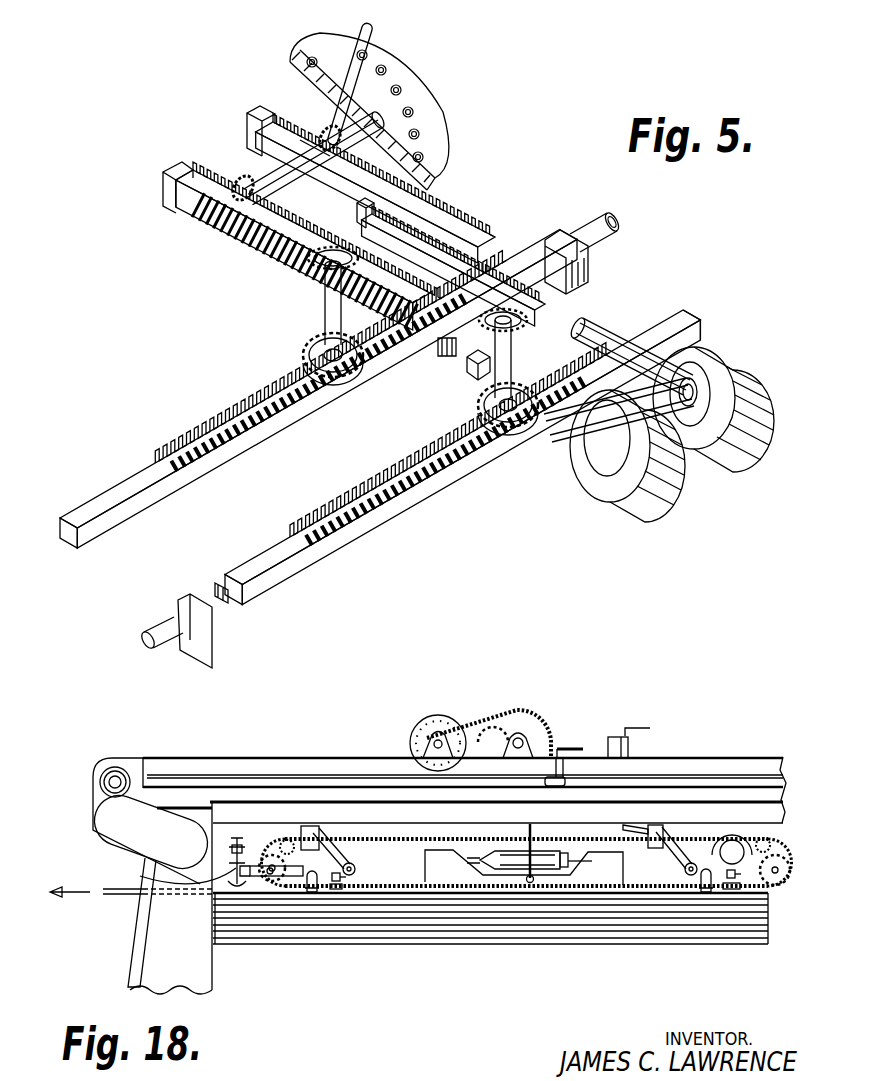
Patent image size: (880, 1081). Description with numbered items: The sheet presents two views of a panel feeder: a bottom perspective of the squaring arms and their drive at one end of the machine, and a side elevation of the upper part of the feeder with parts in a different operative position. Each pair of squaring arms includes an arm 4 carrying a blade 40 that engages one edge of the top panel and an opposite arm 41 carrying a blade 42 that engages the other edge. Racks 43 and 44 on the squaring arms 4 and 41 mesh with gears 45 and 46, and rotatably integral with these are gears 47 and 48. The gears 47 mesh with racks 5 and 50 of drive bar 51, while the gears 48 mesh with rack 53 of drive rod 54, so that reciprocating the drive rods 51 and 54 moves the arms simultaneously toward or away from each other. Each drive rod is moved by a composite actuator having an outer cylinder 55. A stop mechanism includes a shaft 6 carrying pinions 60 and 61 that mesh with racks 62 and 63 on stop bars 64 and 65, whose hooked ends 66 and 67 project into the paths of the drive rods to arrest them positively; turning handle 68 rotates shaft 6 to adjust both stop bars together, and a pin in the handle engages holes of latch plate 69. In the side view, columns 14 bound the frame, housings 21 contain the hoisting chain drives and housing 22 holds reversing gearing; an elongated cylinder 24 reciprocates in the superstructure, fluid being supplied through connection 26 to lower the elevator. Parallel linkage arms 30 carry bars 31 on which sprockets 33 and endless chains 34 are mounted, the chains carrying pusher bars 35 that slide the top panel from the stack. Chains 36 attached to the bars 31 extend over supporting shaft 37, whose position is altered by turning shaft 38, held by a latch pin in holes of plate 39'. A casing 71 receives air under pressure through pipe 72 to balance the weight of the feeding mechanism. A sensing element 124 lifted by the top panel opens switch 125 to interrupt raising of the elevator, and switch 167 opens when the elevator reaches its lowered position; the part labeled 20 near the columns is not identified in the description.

In FIG. 5, the squaring arm 4 is at (658, 318).
In FIG. 18, the rack 5 is at (522, 928).
In FIG. 5, the shaft 6 is at (262, 175).
In FIG. 18, the column 14 is at (143, 950).
In FIG. 18, the sheet 20 is at (190, 947).
In FIG. 18, the housing 21 is at (160, 843).
In FIG. 18, the housing 22 is at (107, 791).
In FIG. 18, the elongated cylinder 24 is at (703, 778).
In FIG. 18, the connection 26 is at (578, 747).
In FIG. 18, the parallel linkage arm 30 is at (323, 835).
In FIG. 18, the bar 31 is at (388, 877).
In FIG. 18, the sprocket 33 is at (776, 857).
In FIG. 18, the endless chain 34 is at (460, 835).
In FIG. 18, the sheet feeding pusher bar 35 is at (397, 832).
In FIG. 18, the chain 36 is at (538, 833).
In FIG. 18, the supporting shaft 37 is at (521, 733).
In FIG. 18, the shaft 38 is at (433, 742).
In FIG. 18, the latch plate 39' is at (468, 726).
In FIG. 5, the blade 40 is at (200, 643).
In FIG. 18, the blade 40 is at (313, 892).
In FIG. 5, the squaring arm 41 is at (98, 502).
In FIG. 18, the squaring arm 41 is at (347, 890).
In FIG. 5, the blade 42 is at (577, 268).
In FIG. 5, the rack 43 is at (406, 470).
In FIG. 5, the rack 44 is at (275, 392).
In FIG. 5, the gear 45 is at (482, 412).
In FIG. 5, the gear 46 is at (353, 368).
In FIG. 5, the gear 47 is at (523, 330).
In FIG. 5, the gear 48 is at (315, 270).
In FIG. 5, the rack 50 is at (460, 272).
In FIG. 5, the drive bar 51 is at (597, 333).
In FIG. 5, the rack 53 is at (440, 360).
In FIG. 5, the drive rod 54 is at (468, 380).
In FIG. 18, the drive rod 54 is at (474, 858).
In FIG. 5, the outer cylinder 55 is at (750, 380).
In FIG. 18, the outer cylinder 55 is at (512, 850).
In FIG. 5, the pinion 60 is at (232, 178).
In FIG. 5, the pinion 61 is at (317, 128).
In FIG. 5, the rack 62 is at (180, 166).
In FIG. 5, the rack 63 is at (427, 205).
In FIG. 5, the stop bar 64 is at (273, 224).
In FIG. 5, the stop bar 65 is at (455, 230).
In FIG. 5, the hooked end 66 is at (177, 207).
In FIG. 5, the hooked end 67 is at (253, 143).
In FIG. 5, the handle 68 is at (345, 83).
In FIG. 5, the latch plate 69 is at (402, 100).
In FIG. 18, the latch plate 69 is at (730, 836).
In FIG. 18, the casing 71 is at (603, 738).
In FIG. 18, the pipe 72 is at (637, 726).
In FIG. 18, the sensing element 124 is at (232, 878).
In FIG. 18, the switch 125 is at (240, 850).
In FIG. 18, the switch 167 is at (173, 873).